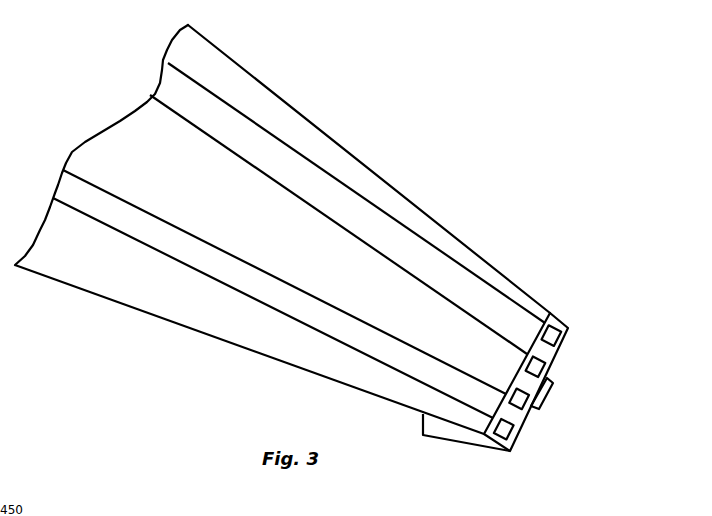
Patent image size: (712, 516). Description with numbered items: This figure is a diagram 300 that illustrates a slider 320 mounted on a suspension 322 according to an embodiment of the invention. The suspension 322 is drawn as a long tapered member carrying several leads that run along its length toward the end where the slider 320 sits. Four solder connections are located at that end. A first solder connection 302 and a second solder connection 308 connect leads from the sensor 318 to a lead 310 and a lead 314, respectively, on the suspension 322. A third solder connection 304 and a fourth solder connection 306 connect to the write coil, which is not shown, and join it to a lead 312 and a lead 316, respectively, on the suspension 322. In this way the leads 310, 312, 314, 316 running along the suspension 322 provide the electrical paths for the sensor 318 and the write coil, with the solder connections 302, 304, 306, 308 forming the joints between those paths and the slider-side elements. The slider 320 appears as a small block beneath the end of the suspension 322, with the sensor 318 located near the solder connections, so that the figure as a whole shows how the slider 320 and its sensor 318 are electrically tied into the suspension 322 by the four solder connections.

The diagram 300 is at (152, 380).
The first solder connection 302 is at (500, 438).
The third solder connection 304 is at (523, 403).
The fourth solder connection 306 is at (537, 358).
The second solder connection 308 is at (568, 328).
The lead 310 is at (248, 291).
The lead 312 is at (375, 322).
The lead 314 is at (422, 242).
The lead 316 is at (470, 310).
The sensor 318 is at (547, 390).
The slider 320 is at (452, 434).
The suspension 322 is at (365, 391).